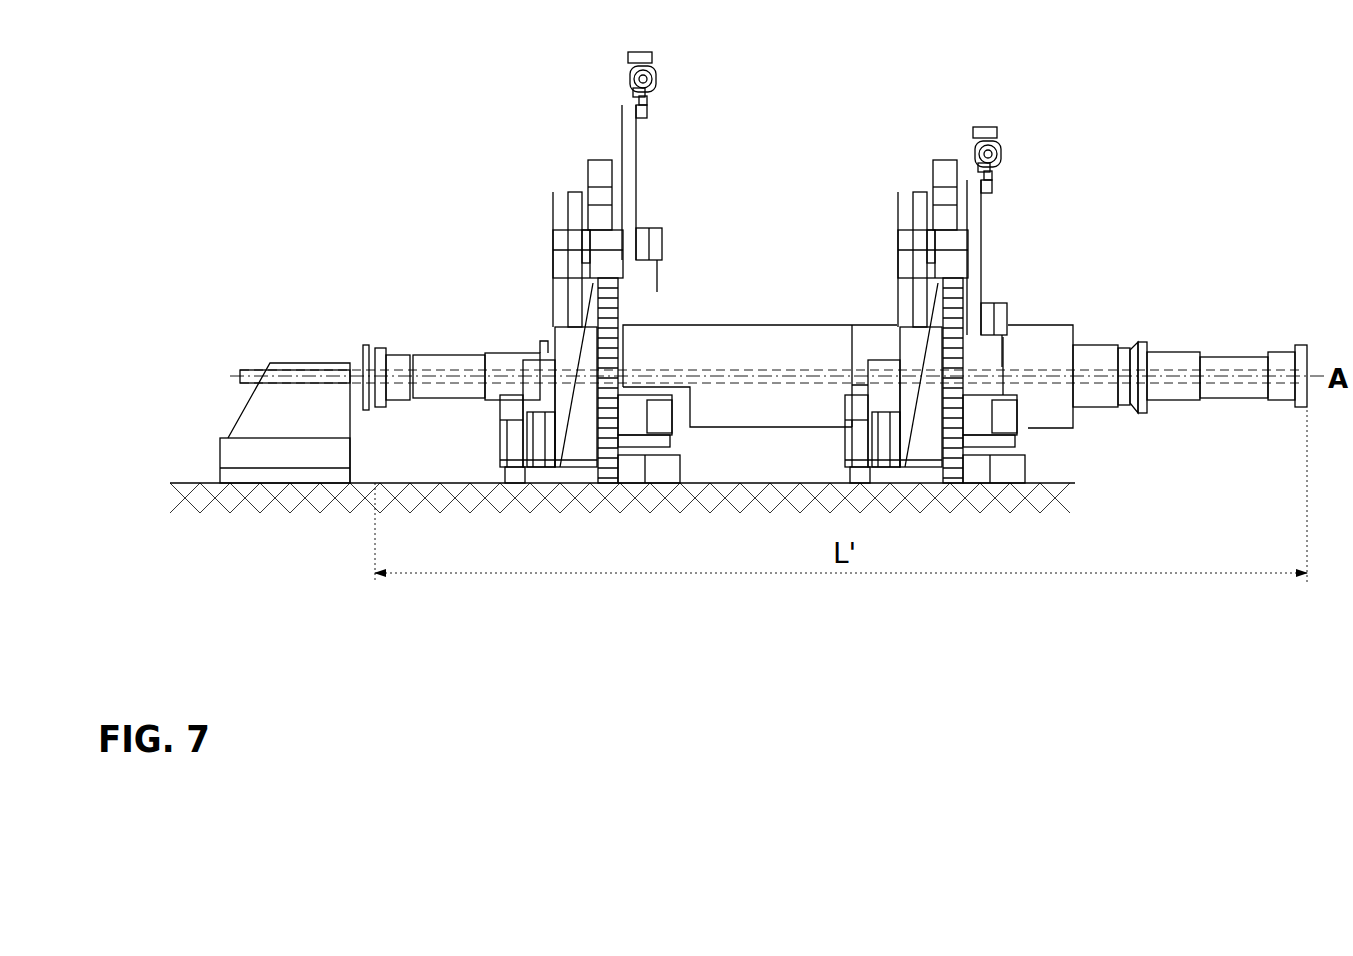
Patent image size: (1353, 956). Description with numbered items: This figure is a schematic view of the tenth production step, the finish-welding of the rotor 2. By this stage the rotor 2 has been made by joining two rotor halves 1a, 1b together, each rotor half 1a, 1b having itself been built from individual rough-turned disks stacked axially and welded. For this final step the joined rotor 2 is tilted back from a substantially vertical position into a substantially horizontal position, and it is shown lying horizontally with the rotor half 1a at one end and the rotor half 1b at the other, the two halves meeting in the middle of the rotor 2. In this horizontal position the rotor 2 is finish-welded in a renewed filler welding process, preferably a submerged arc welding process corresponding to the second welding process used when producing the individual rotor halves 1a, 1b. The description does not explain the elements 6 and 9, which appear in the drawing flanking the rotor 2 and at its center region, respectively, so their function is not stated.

The rotor half 1a is at (450, 352).
The rotor half 1b is at (1175, 345).
The rotor 2 is at (727, 322).
The measuring tower / grinding carriage 6 is at (553, 320).
The coupling / bearing element 9 is at (848, 350).